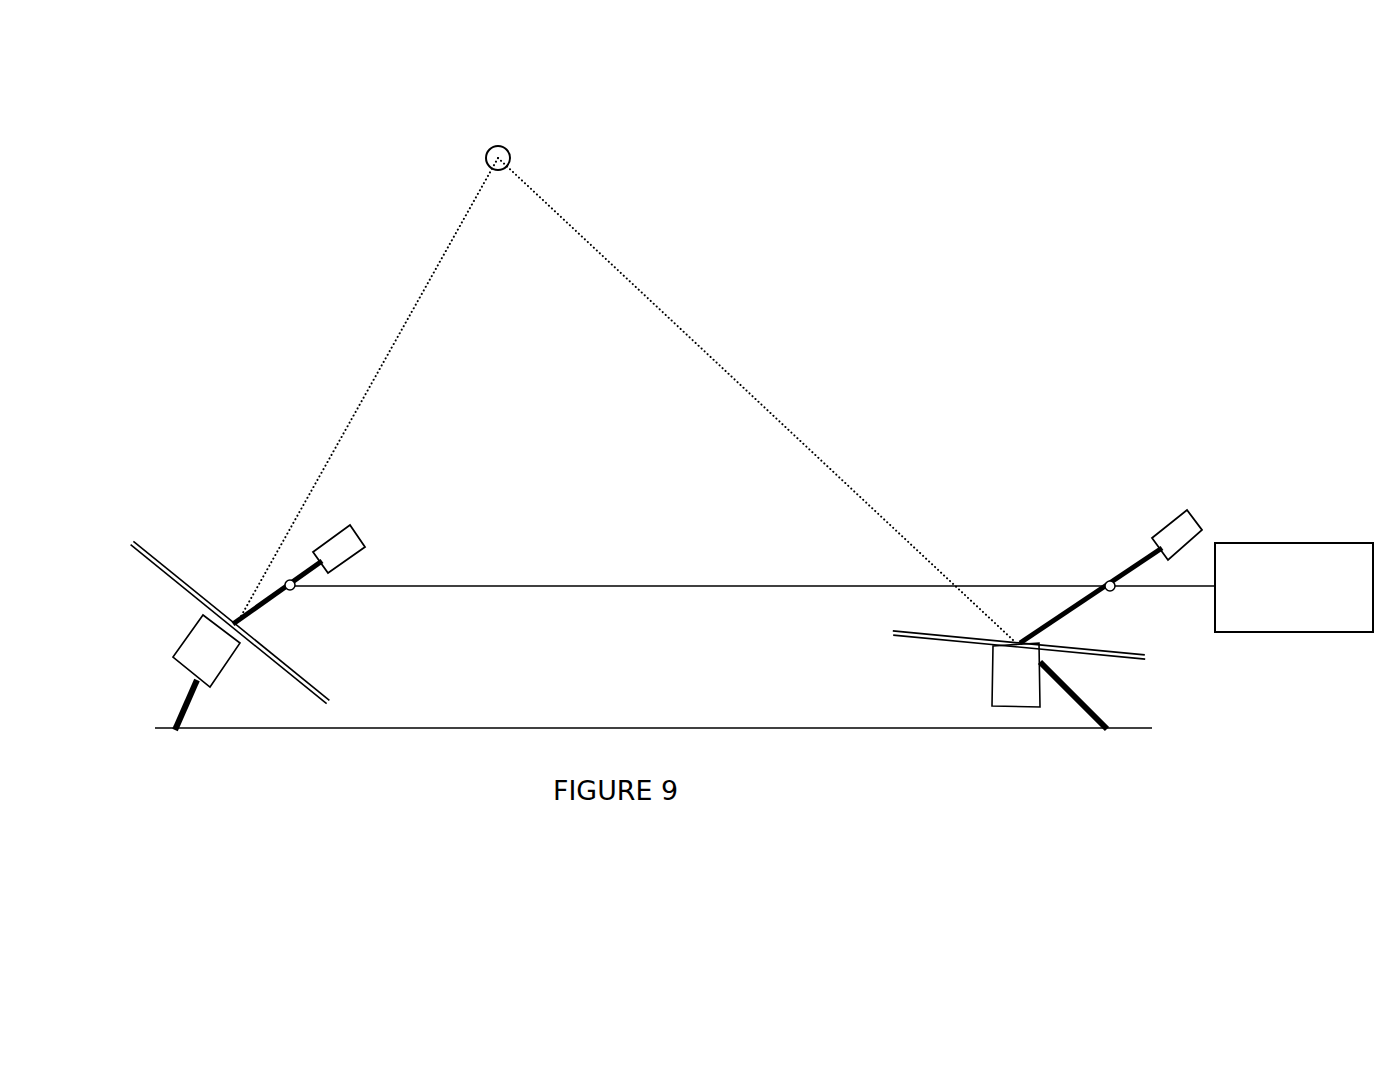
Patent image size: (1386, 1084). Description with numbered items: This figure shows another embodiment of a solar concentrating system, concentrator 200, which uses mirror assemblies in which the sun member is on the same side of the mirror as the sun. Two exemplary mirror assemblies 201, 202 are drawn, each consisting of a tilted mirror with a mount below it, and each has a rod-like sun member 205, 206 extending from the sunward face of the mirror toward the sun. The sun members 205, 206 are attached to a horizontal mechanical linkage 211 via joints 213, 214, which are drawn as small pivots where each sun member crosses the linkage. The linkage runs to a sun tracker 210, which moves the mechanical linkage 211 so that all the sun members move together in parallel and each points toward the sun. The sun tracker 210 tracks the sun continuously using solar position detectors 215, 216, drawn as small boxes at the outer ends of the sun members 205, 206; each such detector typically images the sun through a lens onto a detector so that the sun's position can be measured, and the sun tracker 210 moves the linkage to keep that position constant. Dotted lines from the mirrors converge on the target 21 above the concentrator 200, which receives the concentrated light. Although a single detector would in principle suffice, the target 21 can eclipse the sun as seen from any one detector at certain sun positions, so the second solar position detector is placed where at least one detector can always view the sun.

The target 21 is at (492, 167).
The concentrator 200 is at (916, 202).
The mirror assembly 201 is at (1007, 685).
The mirror assembly 202 is at (215, 632).
The sun member 205 is at (252, 613).
The sun member 206 is at (1067, 618).
The sun tracker 210 is at (1267, 548).
The mechanical linkage 211 is at (608, 586).
The joint 213 is at (295, 586).
The joint 214 is at (1108, 592).
The solar position detector 215 is at (347, 540).
The solar position detector 216 is at (1168, 532).